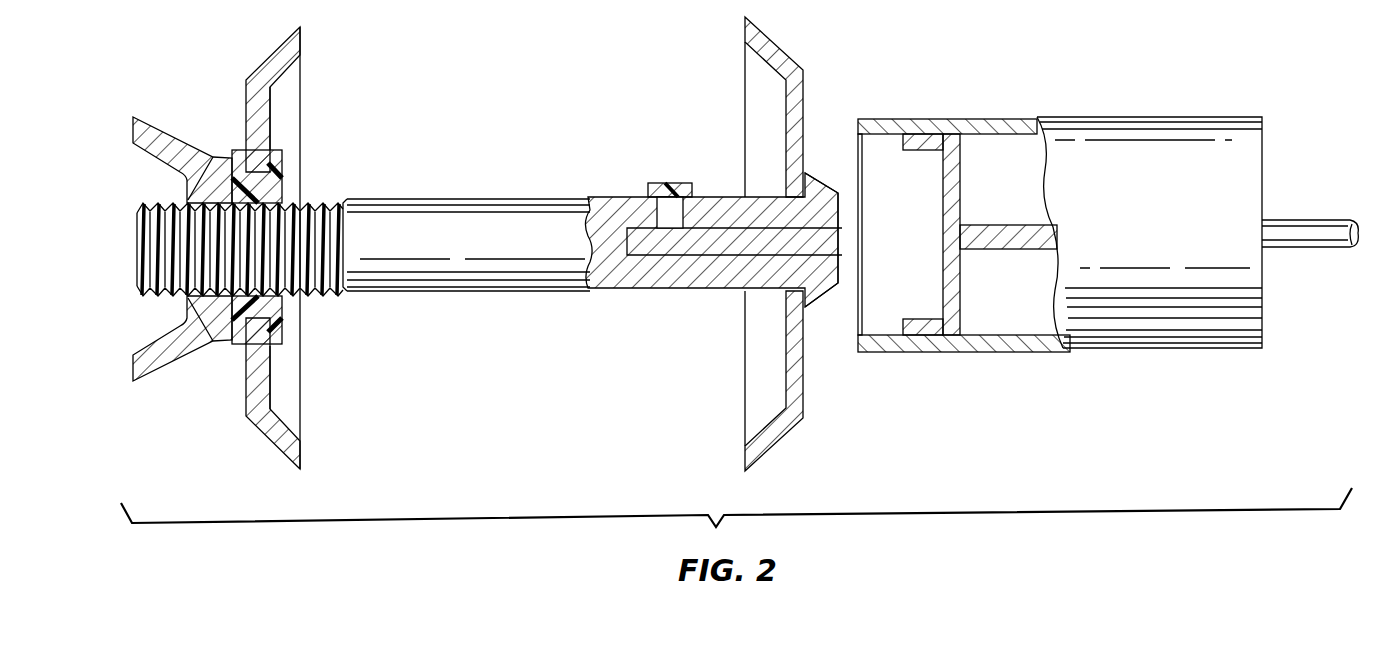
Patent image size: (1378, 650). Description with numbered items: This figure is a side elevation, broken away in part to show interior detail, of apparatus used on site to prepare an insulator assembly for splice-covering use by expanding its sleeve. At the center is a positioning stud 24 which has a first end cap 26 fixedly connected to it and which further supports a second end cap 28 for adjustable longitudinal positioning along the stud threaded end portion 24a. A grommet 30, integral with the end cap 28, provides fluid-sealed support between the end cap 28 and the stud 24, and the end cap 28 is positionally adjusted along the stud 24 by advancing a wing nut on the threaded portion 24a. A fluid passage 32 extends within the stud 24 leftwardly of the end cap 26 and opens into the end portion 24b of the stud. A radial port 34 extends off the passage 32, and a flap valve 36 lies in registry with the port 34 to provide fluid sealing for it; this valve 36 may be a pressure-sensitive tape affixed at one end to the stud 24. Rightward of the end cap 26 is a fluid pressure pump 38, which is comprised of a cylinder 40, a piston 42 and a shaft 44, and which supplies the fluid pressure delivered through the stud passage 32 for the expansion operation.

The positioning stud 24 is at (527, 290).
The stud threaded end portion 24a is at (137, 221).
The end portion of the stud 24b is at (832, 185).
The first end cap 26 is at (755, 78).
The end cap 28 is at (292, 101).
The grommet 30 is at (282, 165).
The fluid passage 32 is at (170, 370).
The radial port 34 is at (680, 216).
The flap valve 36 is at (655, 182).
The fluid pressure pump 38 is at (1138, 106).
The cylinder 40 is at (898, 118).
The piston 42 is at (950, 240).
The shaft 44 is at (1000, 225).